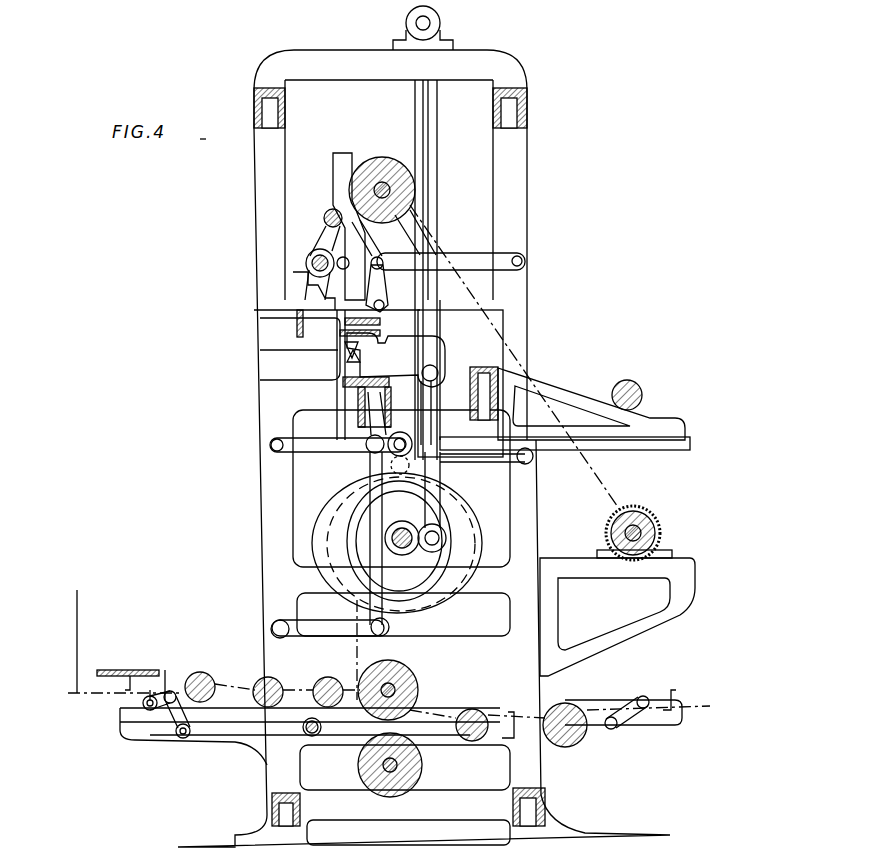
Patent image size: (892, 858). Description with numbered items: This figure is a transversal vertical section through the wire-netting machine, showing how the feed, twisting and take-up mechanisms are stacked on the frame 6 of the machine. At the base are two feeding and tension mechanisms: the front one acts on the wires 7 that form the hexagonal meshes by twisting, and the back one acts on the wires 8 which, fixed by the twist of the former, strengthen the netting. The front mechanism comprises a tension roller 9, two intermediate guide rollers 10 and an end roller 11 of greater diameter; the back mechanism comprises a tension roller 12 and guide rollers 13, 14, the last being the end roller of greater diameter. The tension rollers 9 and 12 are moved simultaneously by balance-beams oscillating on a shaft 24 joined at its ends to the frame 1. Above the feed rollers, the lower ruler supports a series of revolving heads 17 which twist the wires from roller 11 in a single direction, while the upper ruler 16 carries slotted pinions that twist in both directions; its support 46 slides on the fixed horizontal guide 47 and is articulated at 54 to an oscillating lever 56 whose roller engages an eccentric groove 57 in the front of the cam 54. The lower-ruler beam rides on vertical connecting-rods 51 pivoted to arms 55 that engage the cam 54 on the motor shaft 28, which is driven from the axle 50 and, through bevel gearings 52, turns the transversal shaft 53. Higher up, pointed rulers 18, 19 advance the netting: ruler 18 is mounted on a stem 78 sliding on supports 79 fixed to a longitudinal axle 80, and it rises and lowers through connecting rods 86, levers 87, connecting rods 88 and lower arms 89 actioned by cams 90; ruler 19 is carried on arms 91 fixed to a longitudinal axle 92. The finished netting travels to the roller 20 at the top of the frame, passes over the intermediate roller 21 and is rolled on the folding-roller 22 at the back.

The frame 1 is at (106, 670).
The frame 6 is at (282, 580).
The wires 7 is at (124, 638).
The wires 8 is at (692, 704).
The tension roller 9 is at (199, 672).
The intermediate guide rollers 10 is at (322, 680).
The end roller 11 is at (412, 673).
The tension roller 12 is at (474, 740).
The guide rollers 13 is at (560, 730).
The guide roller 14 is at (396, 788).
The upper ruler 16 is at (344, 346).
The revolving heads 17 is at (292, 368).
The ruler 18 is at (368, 321).
The ruler 19 is at (342, 305).
The roller 20 is at (380, 158).
The intermediate roller 21 is at (641, 390).
The folding-roller 22 is at (662, 529).
The shaft 24 is at (260, 745).
The motor shaft 28 is at (380, 532).
The support 46 is at (418, 352).
The fixed horizontal guide 47 is at (446, 352).
The axle 50 is at (506, 372).
The vertical connecting-rods 51 is at (366, 486).
The bevel gearings 52 is at (300, 428).
The transversal shaft 53 is at (455, 452).
The cam 54 is at (447, 362).
The arm 55 is at (430, 153).
The oscillating lever 56 is at (447, 545).
The eccentric groove 57 is at (432, 580).
The stem 78 is at (364, 244).
The supports 79 is at (342, 173).
The longitudinal axle 80 is at (325, 214).
The connecting rods 86 is at (384, 282).
The levers 87 is at (432, 260).
The connecting rods 88 is at (340, 390).
The lower arms 89 is at (457, 453).
The cams 90 is at (472, 512).
The arms 91 is at (292, 278).
The longitudinal axle 92 is at (308, 258).